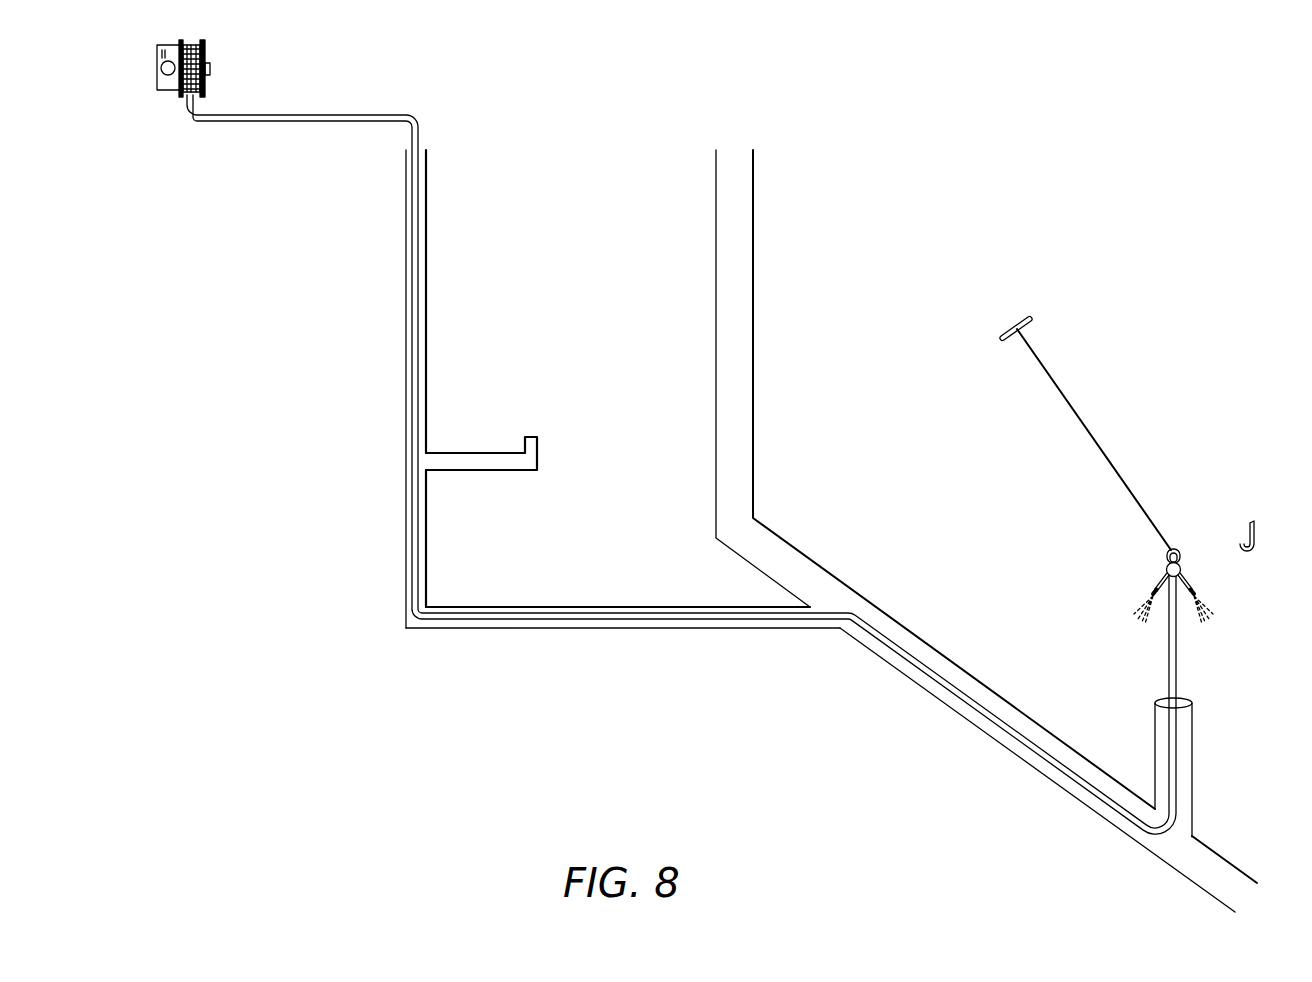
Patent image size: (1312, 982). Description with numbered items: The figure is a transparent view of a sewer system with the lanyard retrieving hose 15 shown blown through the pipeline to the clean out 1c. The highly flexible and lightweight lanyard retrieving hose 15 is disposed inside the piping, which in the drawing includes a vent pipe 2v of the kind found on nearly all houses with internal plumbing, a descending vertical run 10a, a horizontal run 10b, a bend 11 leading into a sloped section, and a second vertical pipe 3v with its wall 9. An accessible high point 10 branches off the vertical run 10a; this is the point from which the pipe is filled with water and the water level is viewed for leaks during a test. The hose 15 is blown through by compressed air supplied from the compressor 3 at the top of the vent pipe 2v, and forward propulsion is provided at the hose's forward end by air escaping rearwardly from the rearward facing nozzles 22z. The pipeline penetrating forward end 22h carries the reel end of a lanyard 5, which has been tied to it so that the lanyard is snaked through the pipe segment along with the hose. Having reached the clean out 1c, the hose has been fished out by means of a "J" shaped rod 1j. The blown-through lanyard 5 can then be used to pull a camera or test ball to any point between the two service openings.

The compressor 3 is at (208, 92).
The lanyard retrieving hose 15 is at (277, 124).
The vent pipe 2v is at (428, 207).
The vertical duct section 10a is at (427, 393).
The high point 10 is at (538, 436).
The horizontal duct section 10b is at (642, 630).
The duct bend 11 is at (820, 629).
The vertical duct 3v is at (754, 174).
The duct wall 9 is at (754, 414).
The lanyard 5 is at (1027, 325).
The pipeline penetrating forward end 22h is at (1177, 550).
The rearward facing nozzles 22z is at (1205, 598).
The "J" shaped rod 1j is at (1255, 528).
The clean out 1c is at (1193, 750).